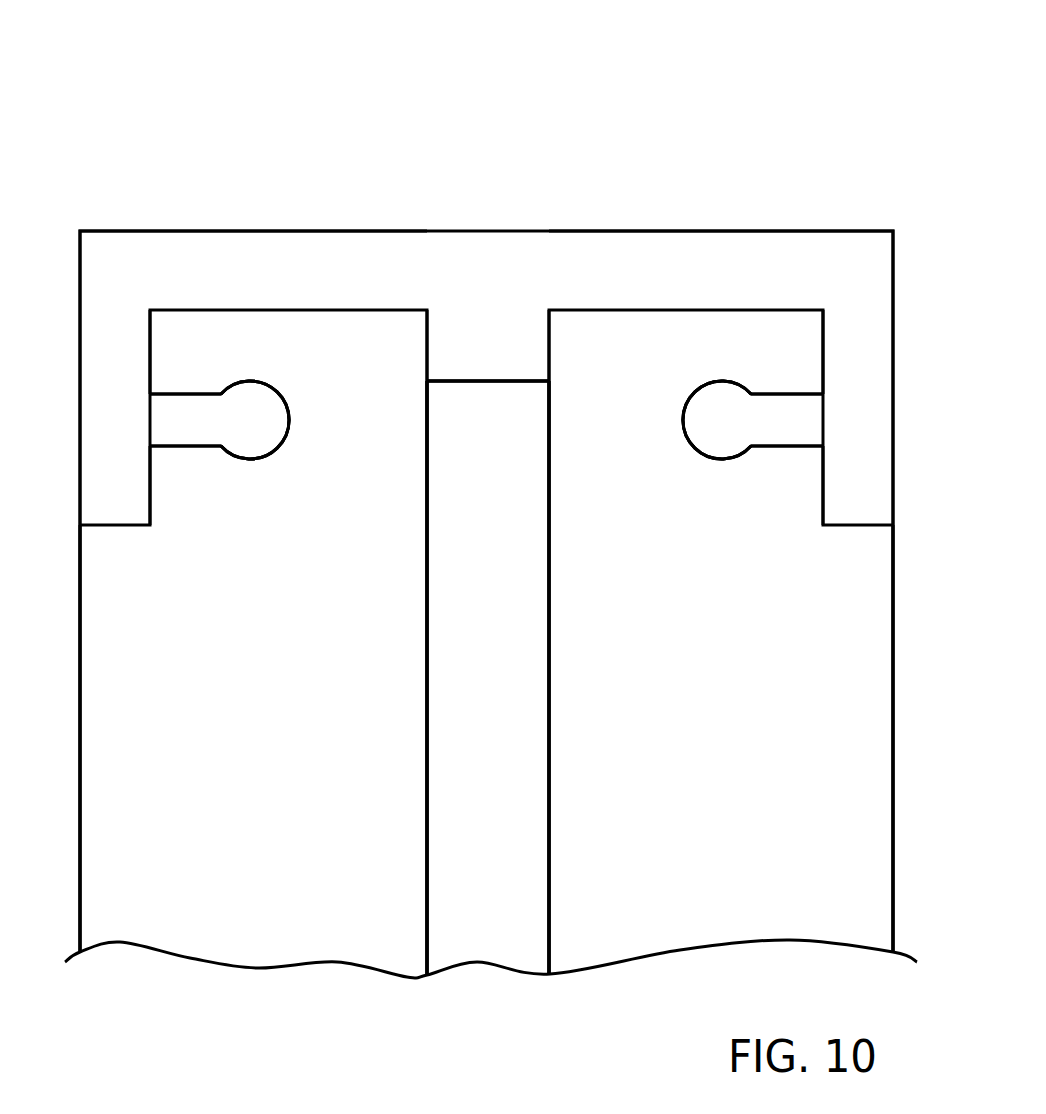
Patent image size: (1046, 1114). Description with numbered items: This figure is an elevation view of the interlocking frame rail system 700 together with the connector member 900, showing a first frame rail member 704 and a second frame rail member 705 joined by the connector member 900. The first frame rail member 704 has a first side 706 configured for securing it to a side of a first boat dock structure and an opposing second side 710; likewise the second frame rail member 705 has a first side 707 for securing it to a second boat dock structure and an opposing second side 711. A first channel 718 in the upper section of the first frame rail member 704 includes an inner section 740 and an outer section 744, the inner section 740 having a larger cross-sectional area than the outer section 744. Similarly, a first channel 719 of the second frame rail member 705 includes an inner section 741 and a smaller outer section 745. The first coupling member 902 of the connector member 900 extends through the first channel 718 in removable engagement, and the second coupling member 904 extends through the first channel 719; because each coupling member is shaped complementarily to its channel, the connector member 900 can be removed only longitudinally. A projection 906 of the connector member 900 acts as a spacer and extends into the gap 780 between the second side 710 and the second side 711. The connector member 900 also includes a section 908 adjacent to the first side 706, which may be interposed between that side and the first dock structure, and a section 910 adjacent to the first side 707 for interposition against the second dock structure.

The interlocking frame rail system 700 is at (569, 123).
The connector member 900 is at (441, 202).
The projection 906 is at (475, 383).
The section 908 is at (128, 218).
The section 910 is at (879, 216).
The first side 706 is at (80, 657).
The first side 707 is at (893, 630).
The second side 710 is at (427, 595).
The second side 711 is at (549, 620).
The gap 780 is at (500, 567).
The first frame rail member 704 is at (452, 632).
The second frame rail member 705 is at (543, 781).
The inner section 740 is at (277, 388).
The first channel 718 is at (287, 433).
The outer section 744 is at (175, 447).
The first coupling member 902 is at (248, 430).
The inner section 741 is at (707, 387).
The outer section 745 is at (800, 393).
The second coupling member 904 is at (728, 432).
The first channel 719 is at (748, 457).